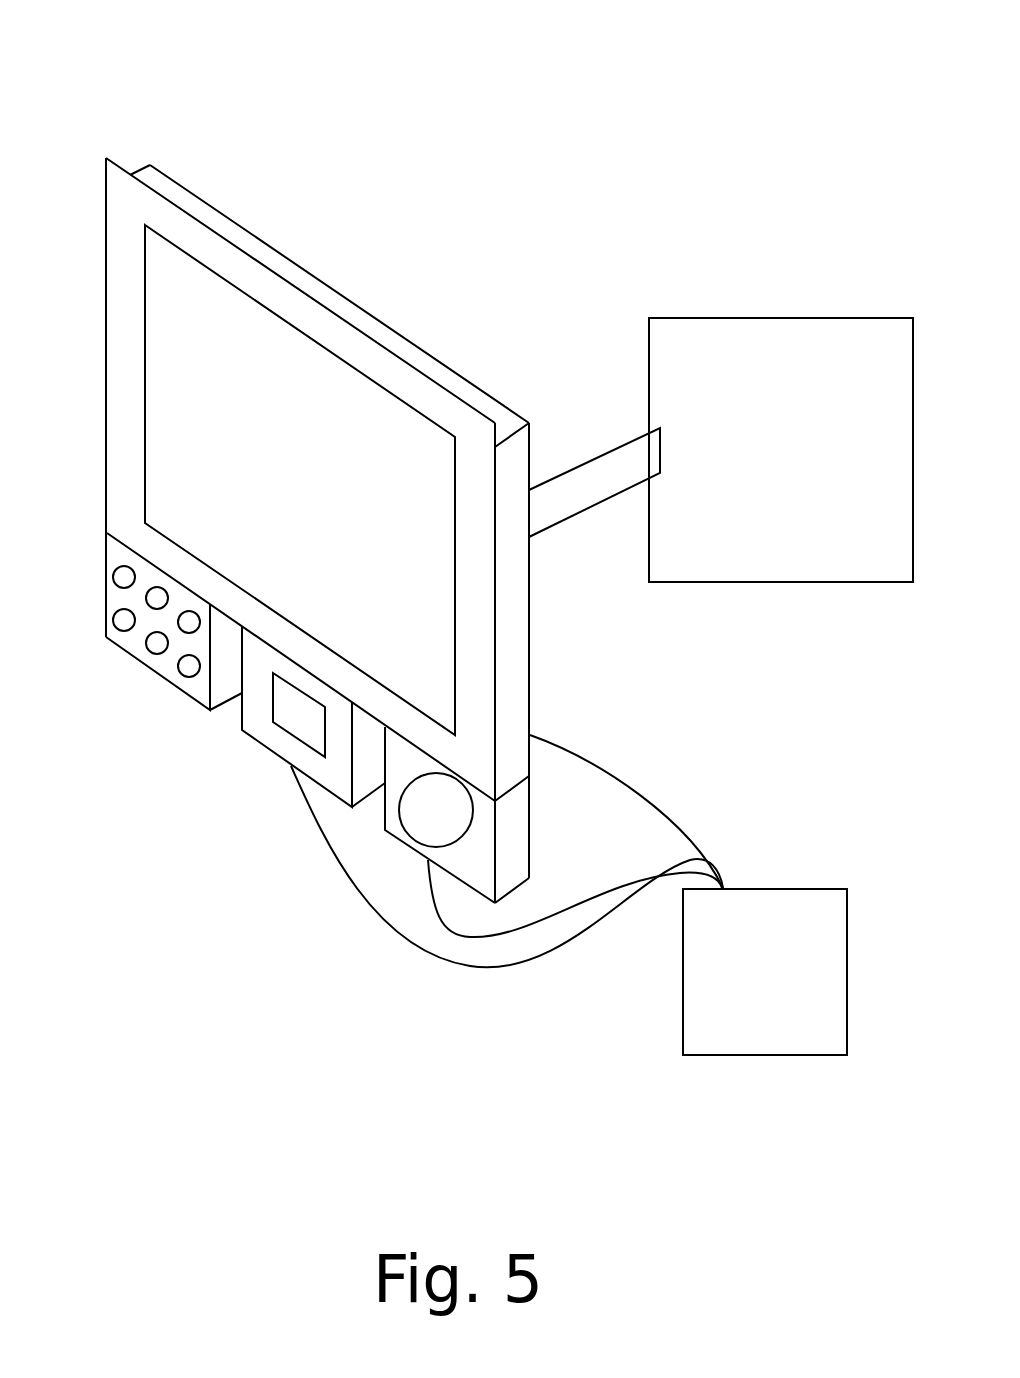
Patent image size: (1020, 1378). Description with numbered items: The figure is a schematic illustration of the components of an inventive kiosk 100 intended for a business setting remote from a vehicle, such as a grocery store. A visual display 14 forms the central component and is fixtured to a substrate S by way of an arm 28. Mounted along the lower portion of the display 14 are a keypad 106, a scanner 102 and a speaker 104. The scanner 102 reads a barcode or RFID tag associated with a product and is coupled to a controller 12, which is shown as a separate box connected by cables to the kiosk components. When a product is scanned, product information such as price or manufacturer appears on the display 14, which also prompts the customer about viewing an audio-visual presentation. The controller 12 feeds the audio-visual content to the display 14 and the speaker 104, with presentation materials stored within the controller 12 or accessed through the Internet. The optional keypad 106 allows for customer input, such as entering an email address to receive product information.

The kiosk 100 is at (514, 133).
The visual display 14 is at (304, 481).
The arm 28 is at (580, 467).
The keypad 106 is at (167, 664).
The scanner 102 is at (267, 731).
The speaker 104 is at (513, 839).
The controller 12 is at (569, 895).
The substrate S is at (803, 474).